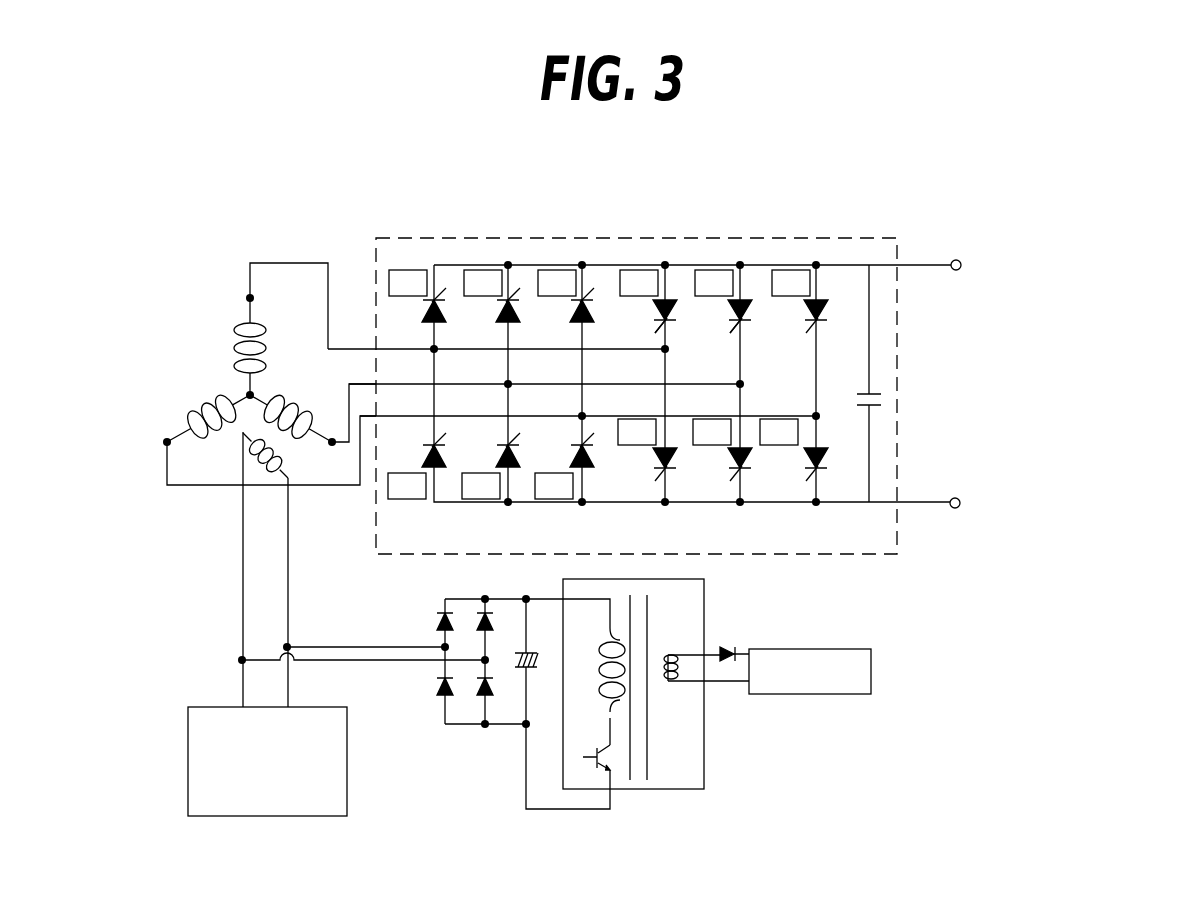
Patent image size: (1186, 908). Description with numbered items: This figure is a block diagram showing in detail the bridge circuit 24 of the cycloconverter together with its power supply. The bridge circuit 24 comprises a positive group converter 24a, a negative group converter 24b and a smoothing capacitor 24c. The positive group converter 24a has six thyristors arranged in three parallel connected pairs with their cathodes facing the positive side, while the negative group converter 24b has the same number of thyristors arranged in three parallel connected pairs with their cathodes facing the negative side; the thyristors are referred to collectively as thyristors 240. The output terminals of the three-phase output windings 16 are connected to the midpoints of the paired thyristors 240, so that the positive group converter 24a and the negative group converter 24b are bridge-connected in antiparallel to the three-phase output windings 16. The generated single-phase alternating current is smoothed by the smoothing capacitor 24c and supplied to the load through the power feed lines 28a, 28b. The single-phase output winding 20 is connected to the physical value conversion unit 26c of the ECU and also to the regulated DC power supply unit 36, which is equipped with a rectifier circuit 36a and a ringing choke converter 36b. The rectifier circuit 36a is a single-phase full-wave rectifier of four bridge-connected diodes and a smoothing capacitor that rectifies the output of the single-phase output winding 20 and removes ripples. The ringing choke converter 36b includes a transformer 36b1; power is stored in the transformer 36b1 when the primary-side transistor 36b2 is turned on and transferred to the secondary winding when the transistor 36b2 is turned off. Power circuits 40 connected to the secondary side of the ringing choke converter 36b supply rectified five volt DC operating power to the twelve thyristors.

The three-phase output windings 16 is at (199, 371).
The single-phase output winding 20 is at (242, 478).
The bridge circuit 24 is at (824, 222).
The positive group converter 24a is at (516, 258).
The negative group converter 24b is at (729, 258).
The smoothing capacitor 24c is at (874, 410).
The thyristors 240 is at (723, 325).
The power feed line 28a is at (850, 265).
The power feed line 28b is at (841, 504).
The physical value conversion unit 26c is at (347, 770).
The regulated DC power supply unit 36 is at (727, 616).
The rectifier circuit 36a is at (426, 689).
The ringing choke converter 36b is at (563, 587).
The transformer 36b1 is at (636, 778).
The primary-side transistor 36b2 is at (596, 762).
The power circuits 40 is at (871, 668).